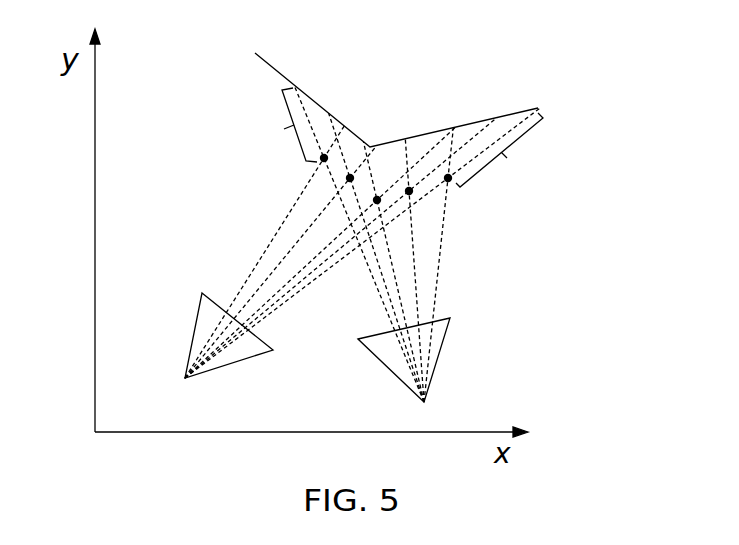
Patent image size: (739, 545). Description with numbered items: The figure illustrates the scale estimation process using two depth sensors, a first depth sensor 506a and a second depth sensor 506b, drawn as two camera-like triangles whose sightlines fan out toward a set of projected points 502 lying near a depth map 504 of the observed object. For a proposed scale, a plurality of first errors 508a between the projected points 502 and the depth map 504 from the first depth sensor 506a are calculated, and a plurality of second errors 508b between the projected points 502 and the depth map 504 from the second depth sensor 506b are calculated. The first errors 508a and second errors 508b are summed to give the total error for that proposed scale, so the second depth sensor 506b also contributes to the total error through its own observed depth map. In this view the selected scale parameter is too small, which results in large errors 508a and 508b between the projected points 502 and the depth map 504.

The projected points 502 is at (349, 178).
The depth map 504 is at (264, 61).
The first depth sensor 506a is at (196, 333).
The second depth sensor 506b is at (447, 338).
The first errors 508a is at (267, 125).
The second errors 508b is at (508, 150).